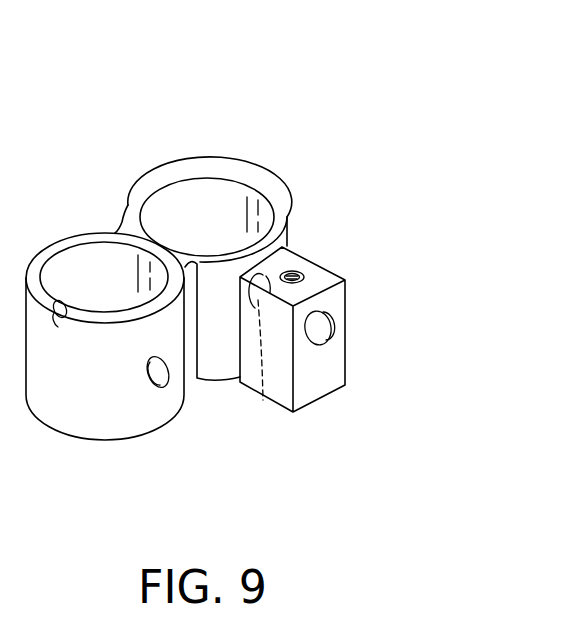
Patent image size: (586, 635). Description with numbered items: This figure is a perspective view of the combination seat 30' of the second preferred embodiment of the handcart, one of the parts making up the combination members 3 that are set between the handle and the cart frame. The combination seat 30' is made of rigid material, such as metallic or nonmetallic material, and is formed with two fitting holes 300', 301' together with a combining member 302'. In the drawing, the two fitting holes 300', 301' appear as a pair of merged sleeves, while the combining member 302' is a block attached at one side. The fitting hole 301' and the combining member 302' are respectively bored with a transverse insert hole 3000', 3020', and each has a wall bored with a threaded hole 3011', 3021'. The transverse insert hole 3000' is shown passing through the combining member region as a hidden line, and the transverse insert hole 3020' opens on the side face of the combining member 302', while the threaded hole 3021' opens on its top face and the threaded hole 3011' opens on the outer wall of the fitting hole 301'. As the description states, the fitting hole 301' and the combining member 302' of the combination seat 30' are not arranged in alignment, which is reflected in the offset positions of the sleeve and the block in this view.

The combination member 3 is at (206, 56).
The combination seat 30' is at (233, 288).
The fitting hole 300' is at (203, 247).
The fitting hole 301' is at (114, 335).
The combining member 302' is at (336, 319).
The threaded hole 3021' is at (360, 299).
The transverse insert hole 3020' is at (358, 358).
The transverse insert hole 3000' is at (262, 374).
The threaded hole 3011' is at (173, 429).